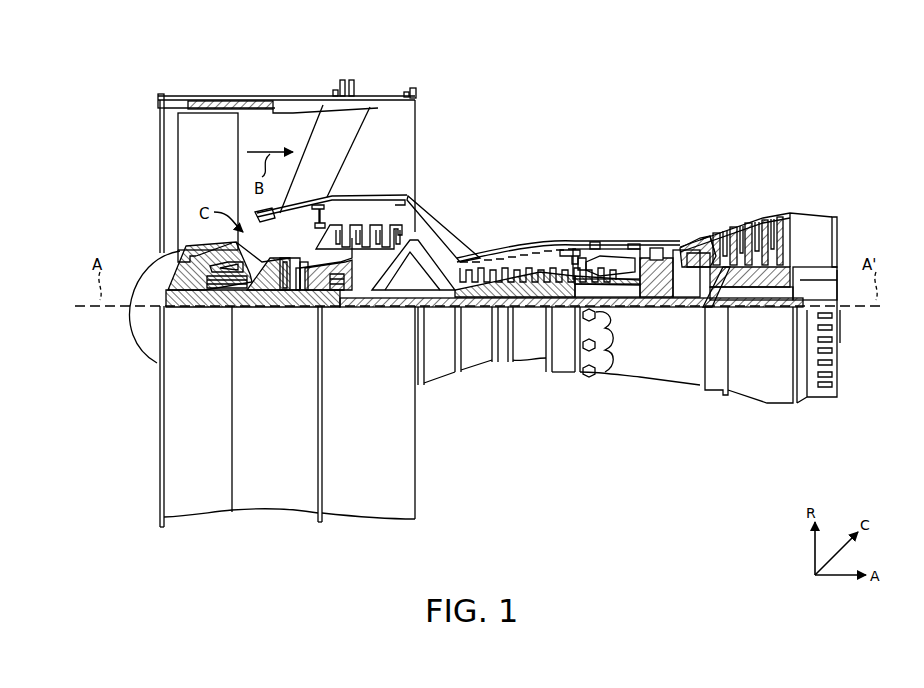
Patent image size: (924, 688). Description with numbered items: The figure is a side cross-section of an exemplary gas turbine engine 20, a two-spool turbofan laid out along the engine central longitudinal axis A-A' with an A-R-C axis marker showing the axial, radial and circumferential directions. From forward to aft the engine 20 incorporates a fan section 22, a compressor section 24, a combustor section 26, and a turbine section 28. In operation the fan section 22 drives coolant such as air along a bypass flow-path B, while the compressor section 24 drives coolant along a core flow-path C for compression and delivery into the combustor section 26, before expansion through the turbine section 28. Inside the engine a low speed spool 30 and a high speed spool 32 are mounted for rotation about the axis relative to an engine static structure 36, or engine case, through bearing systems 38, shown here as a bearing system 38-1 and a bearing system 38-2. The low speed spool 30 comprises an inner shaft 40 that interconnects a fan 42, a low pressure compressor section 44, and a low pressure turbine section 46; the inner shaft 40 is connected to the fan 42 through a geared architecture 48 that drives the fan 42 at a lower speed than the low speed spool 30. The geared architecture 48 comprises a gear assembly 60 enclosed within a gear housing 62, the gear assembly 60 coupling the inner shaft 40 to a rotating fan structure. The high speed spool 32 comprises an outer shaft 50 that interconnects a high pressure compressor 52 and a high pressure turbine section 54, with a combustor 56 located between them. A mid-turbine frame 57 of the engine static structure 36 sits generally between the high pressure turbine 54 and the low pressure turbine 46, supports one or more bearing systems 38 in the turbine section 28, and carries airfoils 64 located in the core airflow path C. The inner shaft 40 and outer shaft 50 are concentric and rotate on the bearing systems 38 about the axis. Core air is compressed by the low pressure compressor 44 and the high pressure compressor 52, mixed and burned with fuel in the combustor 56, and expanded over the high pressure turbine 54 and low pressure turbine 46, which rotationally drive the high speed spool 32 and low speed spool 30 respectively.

The gas turbine engine 20 is at (645, 94).
The fan section 22 is at (300, 84).
The compressor section 24 is at (585, 170).
The combustor section 26 is at (640, 170).
The turbine section 28 is at (786, 170).
The low speed spool 30 is at (530, 315).
The high speed spool 32 is at (568, 266).
The engine static structure 36 is at (562, 357).
The bearing system 38 is at (690, 315).
The bearing system 38-1 is at (215, 310).
The bearing system 38-2 is at (377, 310).
The inner shaft 40 is at (437, 315).
The fan 42 is at (208, 193).
The low pressure compressor section 44 is at (372, 233).
The low pressure turbine section 46 is at (760, 222).
The geared architecture 48 is at (292, 330).
The outer shaft 50 is at (600, 292).
The high pressure compressor 52 is at (530, 268).
The high pressure turbine section 54 is at (660, 256).
The combustor 56 is at (618, 250).
The mid-turbine frame 57 is at (693, 267).
The gear assembly 60 is at (310, 283).
The gear housing 62 is at (310, 268).
The airfoils 64 is at (693, 253).